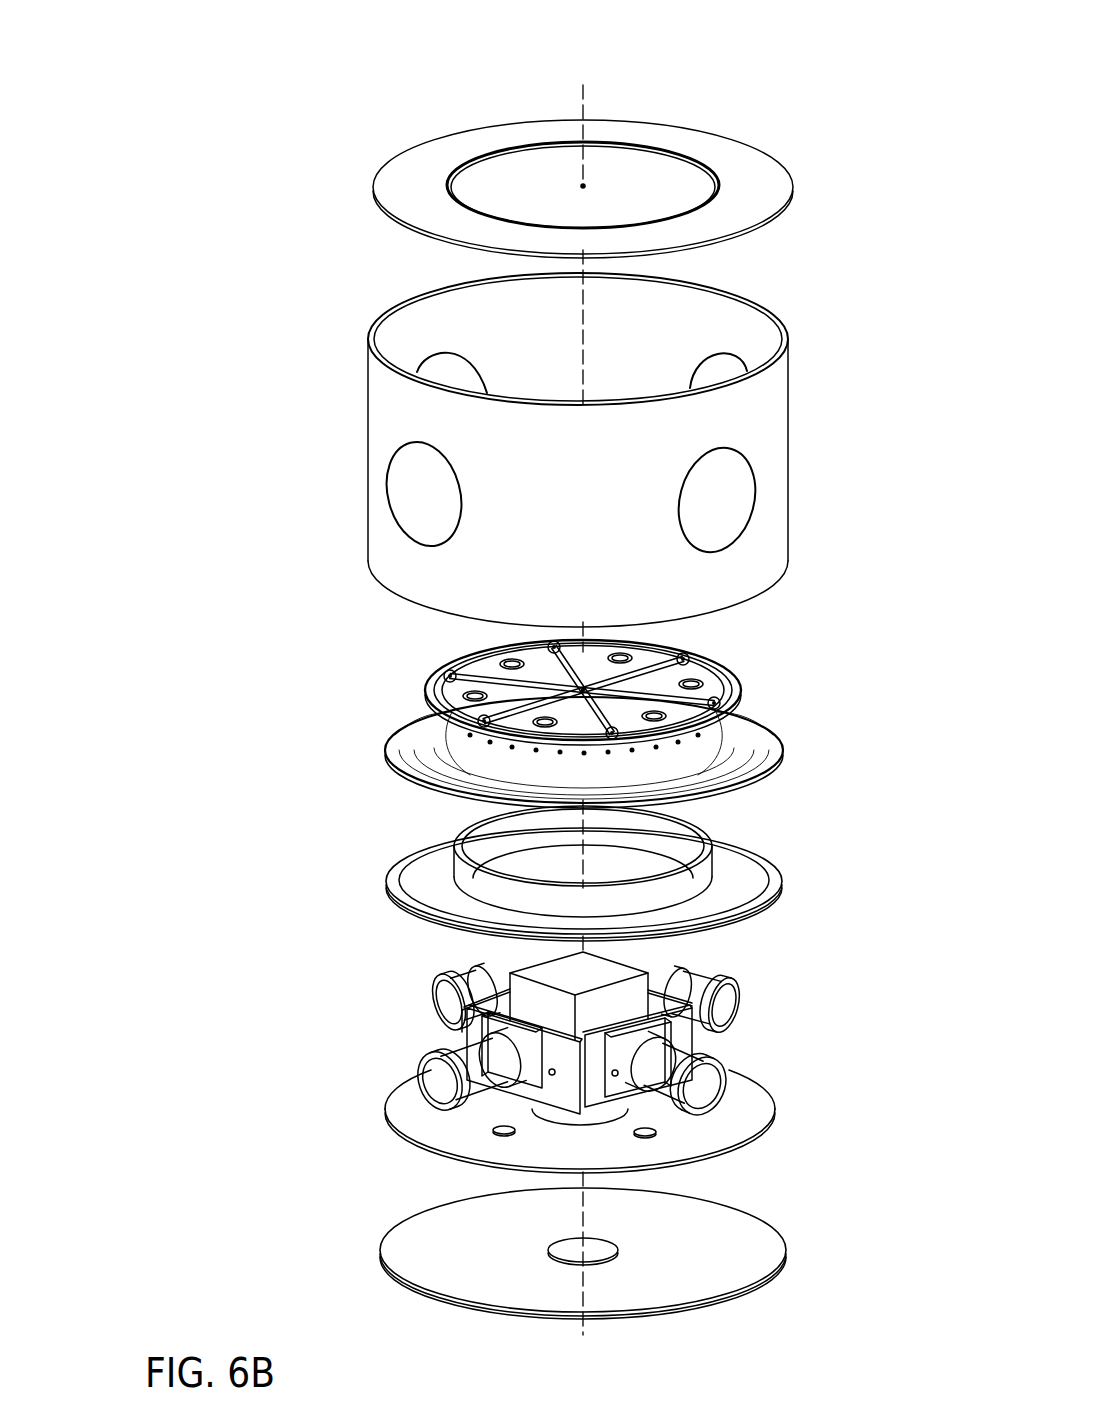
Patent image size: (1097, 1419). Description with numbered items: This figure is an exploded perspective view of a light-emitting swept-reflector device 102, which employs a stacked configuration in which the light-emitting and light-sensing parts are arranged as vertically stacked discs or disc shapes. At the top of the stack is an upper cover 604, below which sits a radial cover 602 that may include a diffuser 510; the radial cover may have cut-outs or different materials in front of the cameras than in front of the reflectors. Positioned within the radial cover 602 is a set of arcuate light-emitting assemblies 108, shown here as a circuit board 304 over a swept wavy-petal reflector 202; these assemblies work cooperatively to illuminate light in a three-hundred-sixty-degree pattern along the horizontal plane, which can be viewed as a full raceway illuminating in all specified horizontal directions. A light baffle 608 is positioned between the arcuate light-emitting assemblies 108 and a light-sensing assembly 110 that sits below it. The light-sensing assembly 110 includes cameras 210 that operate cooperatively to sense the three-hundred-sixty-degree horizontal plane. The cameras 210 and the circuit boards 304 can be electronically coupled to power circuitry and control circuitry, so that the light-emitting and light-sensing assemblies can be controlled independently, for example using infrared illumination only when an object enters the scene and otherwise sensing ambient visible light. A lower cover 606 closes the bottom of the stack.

The light-emitting swept-reflector device 102 is at (391, 72).
The upper cover 604 is at (393, 158).
The diffuser 510 is at (387, 311).
The radial cover 602 is at (358, 434).
The arcuate light-emitting assembly 108 is at (365, 732).
The swept wavy-petal reflector 202 is at (453, 769).
The circuit board 304 is at (696, 728).
The light baffle 608 is at (395, 898).
The camera 210 is at (432, 998).
The light-sensing assembly 110 is at (418, 1013).
The lower cover 606 is at (415, 1216).